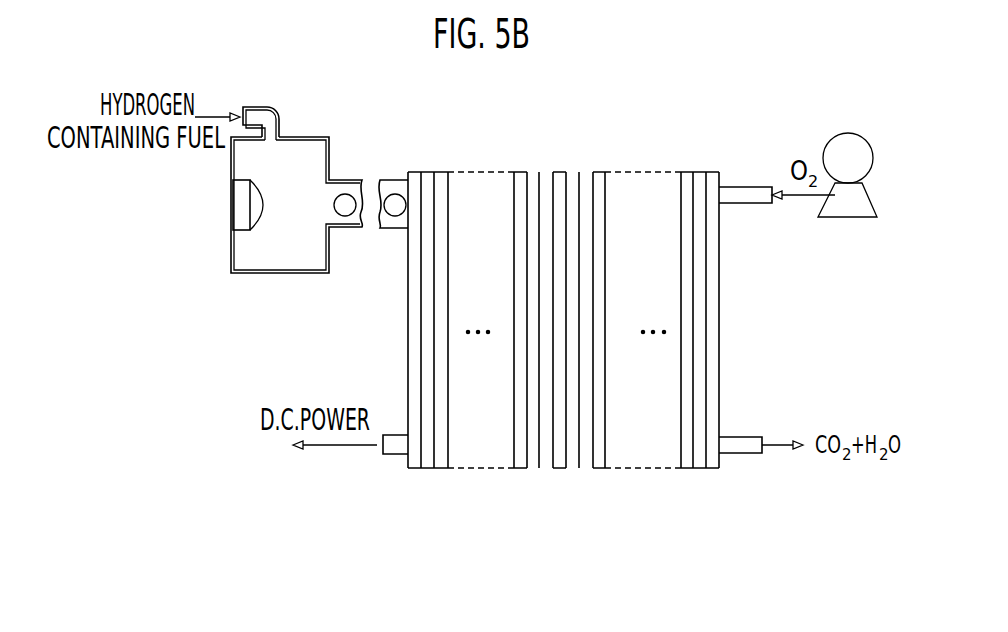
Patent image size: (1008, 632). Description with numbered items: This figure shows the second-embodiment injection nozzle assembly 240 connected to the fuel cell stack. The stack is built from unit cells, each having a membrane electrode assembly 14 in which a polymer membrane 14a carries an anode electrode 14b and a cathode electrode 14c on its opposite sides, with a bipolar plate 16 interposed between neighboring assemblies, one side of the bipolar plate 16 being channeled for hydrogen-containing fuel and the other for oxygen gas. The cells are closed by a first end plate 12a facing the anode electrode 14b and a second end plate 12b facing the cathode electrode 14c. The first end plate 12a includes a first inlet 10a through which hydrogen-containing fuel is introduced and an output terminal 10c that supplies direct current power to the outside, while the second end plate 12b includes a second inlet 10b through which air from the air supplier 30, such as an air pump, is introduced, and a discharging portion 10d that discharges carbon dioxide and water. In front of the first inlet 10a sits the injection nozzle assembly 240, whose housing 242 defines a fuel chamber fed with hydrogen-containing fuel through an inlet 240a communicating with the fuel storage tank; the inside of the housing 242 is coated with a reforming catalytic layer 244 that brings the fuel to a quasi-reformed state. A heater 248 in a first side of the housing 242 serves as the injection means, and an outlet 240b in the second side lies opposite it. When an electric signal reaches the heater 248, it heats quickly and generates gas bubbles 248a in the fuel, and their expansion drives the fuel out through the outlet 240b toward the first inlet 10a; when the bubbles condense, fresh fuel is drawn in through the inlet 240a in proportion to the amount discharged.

The injection nozzle assembly 240 is at (251, 191).
The inlet 240a is at (254, 106).
The outlet 240b is at (344, 193).
The housing 242 is at (313, 273).
The reforming catalytic layer 244 is at (287, 143).
The heater 248 is at (240, 203).
The gas bubbles 248a is at (265, 227).
The first inlet 10a is at (397, 180).
The second inlet 10b is at (743, 186).
The output terminal 10c is at (392, 455).
The discharging portion 10d is at (742, 453).
The first end plate 12a is at (413, 468).
The second end plate 12b is at (712, 468).
The membrane electrode assembly 14 is at (603, 366).
The polymer membrane 14a is at (557, 468).
The anode electrode 14b is at (538, 468).
The cathode electrode 14c is at (579, 468).
The bipolar plate 16 is at (520, 170).
The air supplier 30 is at (848, 217).